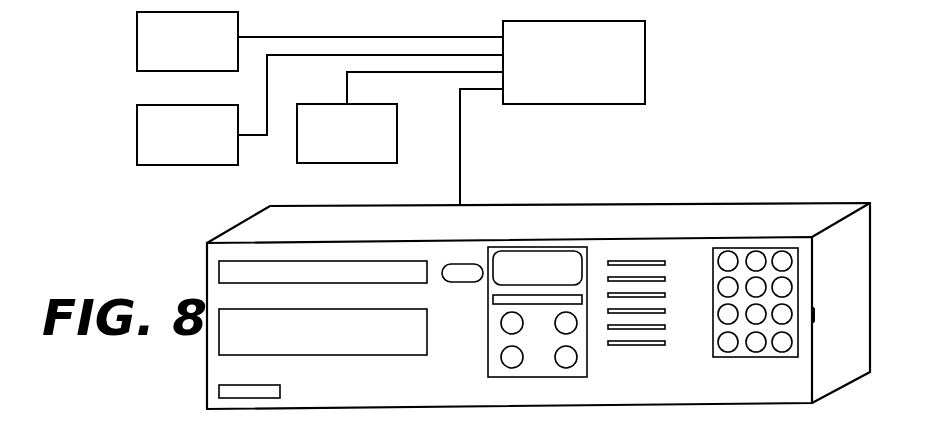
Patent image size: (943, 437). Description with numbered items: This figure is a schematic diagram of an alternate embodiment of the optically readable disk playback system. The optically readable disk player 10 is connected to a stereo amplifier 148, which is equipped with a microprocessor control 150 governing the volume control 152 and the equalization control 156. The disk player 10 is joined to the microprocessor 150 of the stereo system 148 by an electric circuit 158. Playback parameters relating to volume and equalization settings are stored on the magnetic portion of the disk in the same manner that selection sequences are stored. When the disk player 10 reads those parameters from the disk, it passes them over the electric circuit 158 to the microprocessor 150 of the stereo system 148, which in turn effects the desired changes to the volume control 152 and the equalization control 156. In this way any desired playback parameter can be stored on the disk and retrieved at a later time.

The optically readable disk player 10 is at (705, 188).
The stereo amplifier 148 is at (637, 40).
The microprocessor control 150 is at (367, 153).
The volume control 152 is at (152, 124).
The equalization control 156 is at (152, 26).
The electric circuit 158 is at (461, 182).